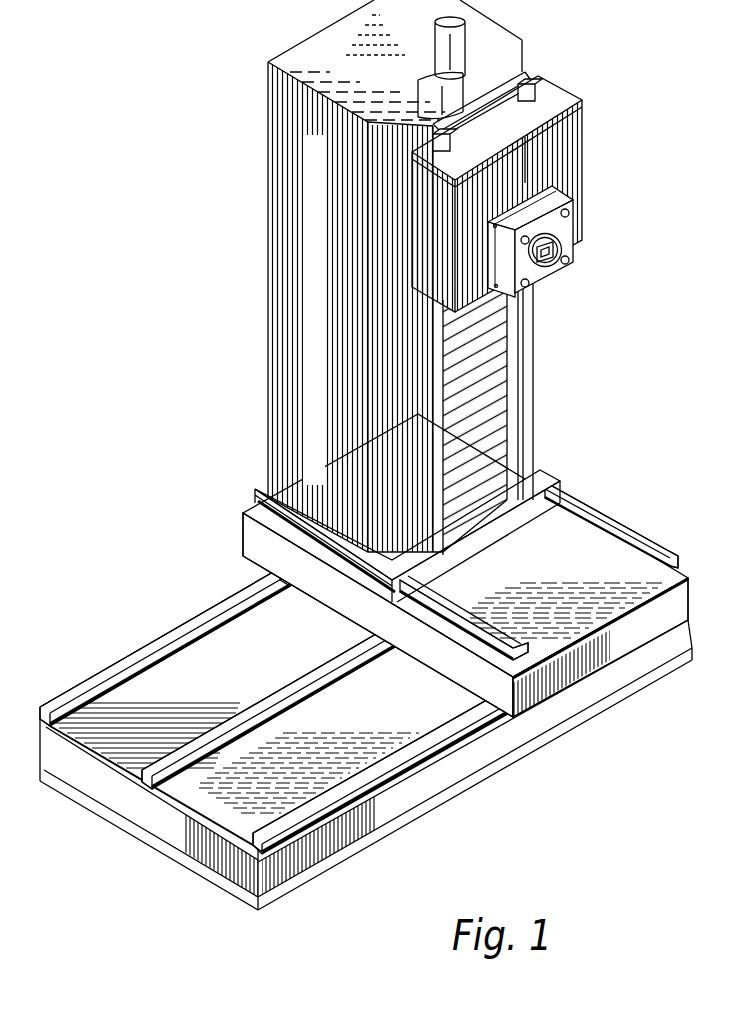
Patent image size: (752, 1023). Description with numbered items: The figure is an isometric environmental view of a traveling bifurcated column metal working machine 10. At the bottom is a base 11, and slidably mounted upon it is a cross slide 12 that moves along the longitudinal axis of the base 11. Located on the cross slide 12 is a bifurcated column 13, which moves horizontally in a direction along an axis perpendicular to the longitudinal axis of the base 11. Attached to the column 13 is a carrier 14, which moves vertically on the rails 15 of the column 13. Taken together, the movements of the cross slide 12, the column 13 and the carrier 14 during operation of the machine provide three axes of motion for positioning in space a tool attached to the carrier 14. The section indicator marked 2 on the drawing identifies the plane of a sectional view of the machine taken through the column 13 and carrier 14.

The traveling bifurcated column metal working machine 10 is at (366, 456).
The base 11 is at (190, 842).
The cross slide 12 is at (554, 561).
The bifurcated column 13 is at (278, 418).
The carrier 14 is at (573, 148).
The rails 15 is at (430, 410).
The section line 2- 2 is at (548, 170).